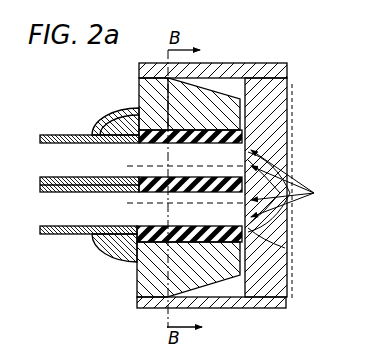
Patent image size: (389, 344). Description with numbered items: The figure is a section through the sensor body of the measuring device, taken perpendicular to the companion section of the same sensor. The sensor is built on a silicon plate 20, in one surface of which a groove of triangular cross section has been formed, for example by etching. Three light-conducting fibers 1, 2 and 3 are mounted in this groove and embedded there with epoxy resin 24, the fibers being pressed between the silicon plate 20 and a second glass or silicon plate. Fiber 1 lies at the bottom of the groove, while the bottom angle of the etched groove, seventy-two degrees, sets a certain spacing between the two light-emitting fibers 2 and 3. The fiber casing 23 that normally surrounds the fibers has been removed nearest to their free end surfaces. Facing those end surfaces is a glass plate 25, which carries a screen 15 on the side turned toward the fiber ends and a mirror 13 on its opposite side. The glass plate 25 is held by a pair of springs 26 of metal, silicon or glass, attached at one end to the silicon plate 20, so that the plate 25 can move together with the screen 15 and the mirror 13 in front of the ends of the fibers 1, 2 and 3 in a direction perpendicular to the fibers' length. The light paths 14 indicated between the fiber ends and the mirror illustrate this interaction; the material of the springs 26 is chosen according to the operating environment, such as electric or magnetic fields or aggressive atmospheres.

The light-conducting fiber 1 is at (140, 197).
The light-conducting fiber 2 is at (133, 132).
The light-conducting fiber 3 is at (68, 217).
The mirror 13 is at (290, 137).
The light beams 14 is at (294, 191).
The screen 15 is at (265, 225).
The silicon plate 20 is at (197, 99).
The fiber casing 23 is at (78, 138).
The epoxy resin 24 is at (108, 127).
The glass plate 25 is at (270, 118).
The springs 26 is at (195, 72).